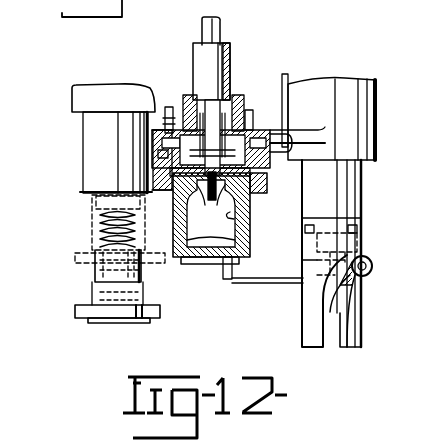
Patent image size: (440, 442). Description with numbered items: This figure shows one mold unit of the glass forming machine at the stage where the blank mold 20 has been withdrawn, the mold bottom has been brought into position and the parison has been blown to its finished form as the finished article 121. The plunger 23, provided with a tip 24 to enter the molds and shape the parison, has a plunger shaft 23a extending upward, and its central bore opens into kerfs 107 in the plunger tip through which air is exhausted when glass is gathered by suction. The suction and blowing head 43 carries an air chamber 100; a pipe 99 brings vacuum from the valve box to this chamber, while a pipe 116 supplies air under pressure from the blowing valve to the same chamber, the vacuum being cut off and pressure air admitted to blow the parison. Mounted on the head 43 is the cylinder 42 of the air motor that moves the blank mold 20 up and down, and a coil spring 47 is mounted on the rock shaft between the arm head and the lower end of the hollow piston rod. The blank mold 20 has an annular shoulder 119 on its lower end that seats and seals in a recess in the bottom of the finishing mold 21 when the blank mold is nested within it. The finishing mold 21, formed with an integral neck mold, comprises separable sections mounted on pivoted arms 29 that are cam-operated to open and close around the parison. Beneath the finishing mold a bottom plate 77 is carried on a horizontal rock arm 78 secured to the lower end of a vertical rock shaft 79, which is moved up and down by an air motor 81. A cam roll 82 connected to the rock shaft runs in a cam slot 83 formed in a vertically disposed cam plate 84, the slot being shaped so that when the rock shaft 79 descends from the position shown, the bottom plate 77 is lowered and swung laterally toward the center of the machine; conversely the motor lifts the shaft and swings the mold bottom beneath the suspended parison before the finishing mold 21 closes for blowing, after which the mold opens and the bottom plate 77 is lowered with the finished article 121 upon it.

The plunger shaft 23a is at (221, 20).
The plunger 23 is at (222, 58).
The pipe 99 is at (172, 106).
The suction and blowing head 43 is at (246, 130).
The air chamber 100 is at (242, 134).
The pipe 116 is at (285, 90).
The air motor 81 is at (363, 93).
The cylinder 42 is at (90, 133).
The coil spring 47 is at (100, 228).
The kerfs 107 is at (190, 198).
The pivoted arms 29 is at (266, 192).
The plunger tip 24 is at (249, 203).
The finished article 121 is at (235, 218).
The finishing mold 21 is at (250, 233).
The blank mold 20 is at (95, 277).
The annular shoulder 119 is at (92, 300).
The bottom plate 77 is at (190, 262).
The horizontal rock arm 78 is at (278, 281).
The vertical rock shaft 79 is at (358, 239).
The cam roll 82 is at (373, 268).
The cam slot 83 is at (347, 312).
The cam plate 84 is at (303, 332).